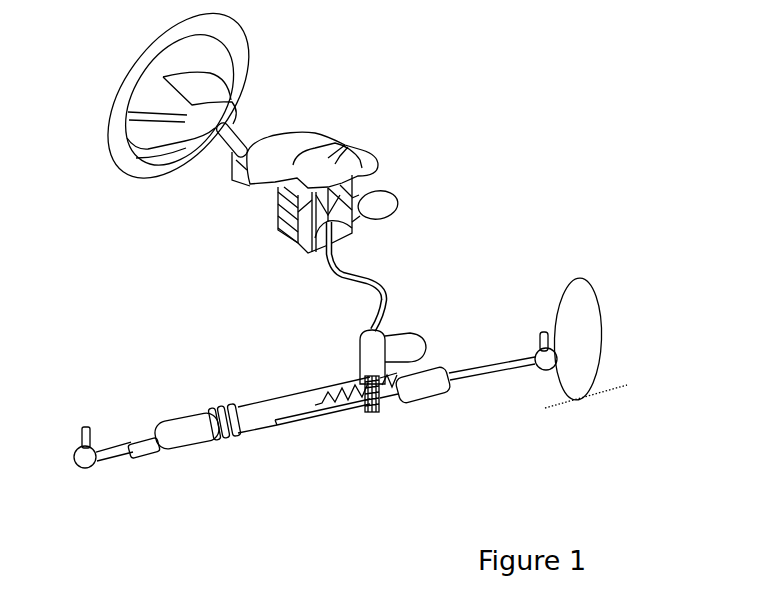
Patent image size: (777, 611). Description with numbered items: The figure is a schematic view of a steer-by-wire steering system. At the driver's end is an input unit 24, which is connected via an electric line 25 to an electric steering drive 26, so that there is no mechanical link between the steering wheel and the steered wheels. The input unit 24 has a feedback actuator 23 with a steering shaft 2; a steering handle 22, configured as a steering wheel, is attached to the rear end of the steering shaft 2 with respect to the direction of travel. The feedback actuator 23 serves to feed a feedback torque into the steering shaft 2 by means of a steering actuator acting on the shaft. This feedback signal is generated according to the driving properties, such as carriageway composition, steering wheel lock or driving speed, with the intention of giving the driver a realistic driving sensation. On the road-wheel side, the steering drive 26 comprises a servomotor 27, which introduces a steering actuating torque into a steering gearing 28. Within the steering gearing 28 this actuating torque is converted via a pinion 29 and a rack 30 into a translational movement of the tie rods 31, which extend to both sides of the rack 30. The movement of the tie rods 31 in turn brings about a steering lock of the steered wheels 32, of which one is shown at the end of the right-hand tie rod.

The steering shaft 2 is at (237, 130).
The steering handle 22 is at (240, 45).
The feedback actuator 23 is at (279, 230).
The input unit 24 is at (356, 124).
The electric line 25 is at (350, 281).
The electric steering drive 26 is at (383, 328).
The servomotor 27 is at (430, 334).
The steering gearing 28 is at (337, 373).
The pinion 29 is at (372, 406).
The rack 30 is at (336, 406).
The tie rods 31 is at (140, 458).
The steered wheels 32 is at (602, 317).